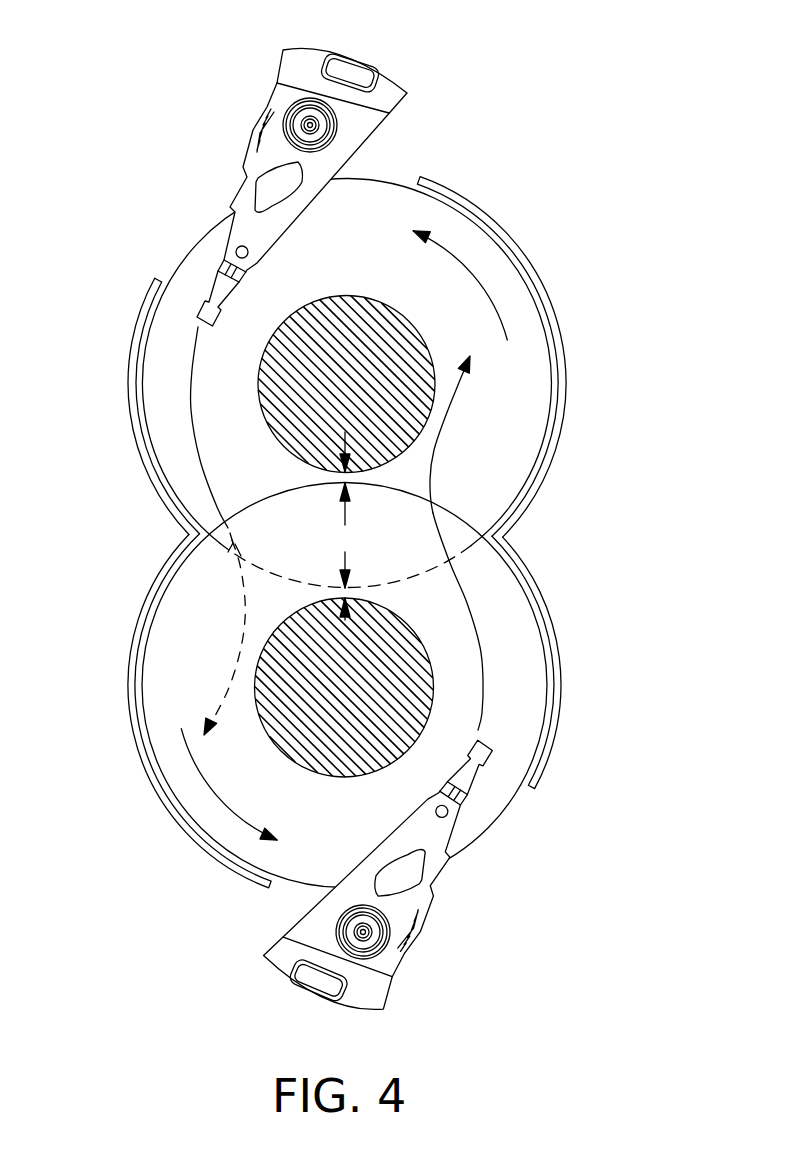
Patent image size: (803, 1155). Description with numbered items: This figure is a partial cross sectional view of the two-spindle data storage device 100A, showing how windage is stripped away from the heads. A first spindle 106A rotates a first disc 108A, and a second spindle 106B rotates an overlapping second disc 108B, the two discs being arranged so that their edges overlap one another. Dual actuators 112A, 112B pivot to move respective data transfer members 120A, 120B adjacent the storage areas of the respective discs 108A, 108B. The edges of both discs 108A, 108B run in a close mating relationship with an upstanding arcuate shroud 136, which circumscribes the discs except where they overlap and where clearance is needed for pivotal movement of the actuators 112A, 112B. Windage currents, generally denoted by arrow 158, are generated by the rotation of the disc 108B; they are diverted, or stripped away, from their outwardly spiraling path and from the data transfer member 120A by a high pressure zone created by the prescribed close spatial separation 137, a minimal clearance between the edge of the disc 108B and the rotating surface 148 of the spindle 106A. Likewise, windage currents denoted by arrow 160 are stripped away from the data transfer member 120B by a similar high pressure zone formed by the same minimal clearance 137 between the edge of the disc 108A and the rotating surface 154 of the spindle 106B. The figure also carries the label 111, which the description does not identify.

The data storage device 100A is at (165, 75).
The first spindle 106A is at (361, 284).
The second spindle 106B is at (372, 781).
The first disc 108A is at (460, 242).
The second disc 108B is at (497, 602).
The disk rotation direction 111 is at (477, 283).
The first actuator 112A is at (235, 155).
The second actuator 112B is at (438, 937).
The first data transfer member 120A is at (198, 330).
The second data transfer member 120B is at (523, 722).
The shroud 136 is at (548, 395).
The close spatial separation 137 is at (344, 535).
The rotating surface of first spindle 148 is at (352, 480).
The rotating surface of second spindle 154 is at (333, 588).
The windage currents arrow 158 is at (435, 463).
The windage currents arrow 160 is at (244, 635).